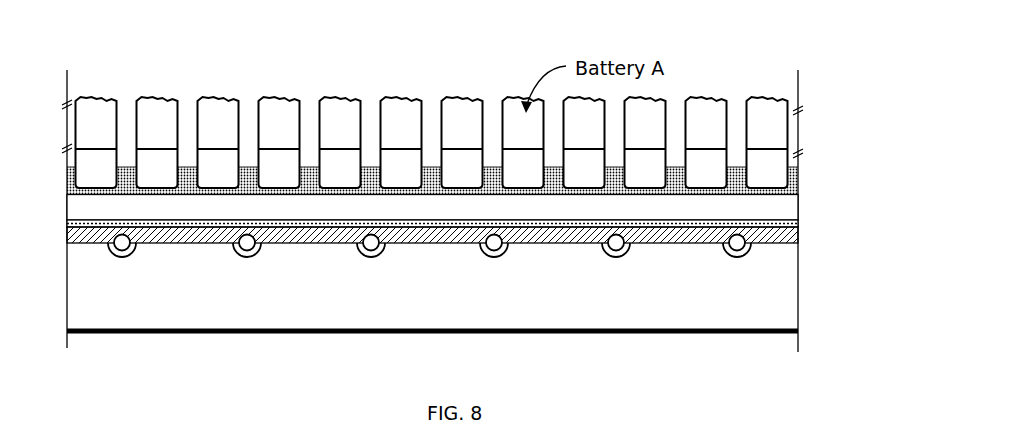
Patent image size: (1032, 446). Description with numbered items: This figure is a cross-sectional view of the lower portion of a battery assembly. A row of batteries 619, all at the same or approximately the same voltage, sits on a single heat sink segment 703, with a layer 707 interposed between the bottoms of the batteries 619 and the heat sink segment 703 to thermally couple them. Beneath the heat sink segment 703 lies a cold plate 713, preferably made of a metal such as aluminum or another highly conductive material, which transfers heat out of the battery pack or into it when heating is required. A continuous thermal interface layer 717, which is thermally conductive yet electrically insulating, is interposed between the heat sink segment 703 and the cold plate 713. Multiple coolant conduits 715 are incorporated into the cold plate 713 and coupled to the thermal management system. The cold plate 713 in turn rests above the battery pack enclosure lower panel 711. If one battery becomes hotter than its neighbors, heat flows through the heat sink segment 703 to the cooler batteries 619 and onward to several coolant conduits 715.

The batteries 619 is at (432, 142).
The heat sink segment 703 is at (450, 217).
The layer 707 is at (791, 181).
The battery pack enclosure lower panel 711 is at (587, 334).
The cold plate 713 is at (658, 238).
The coolant conduits 715 is at (372, 256).
The thermal interface layer 717 is at (788, 225).